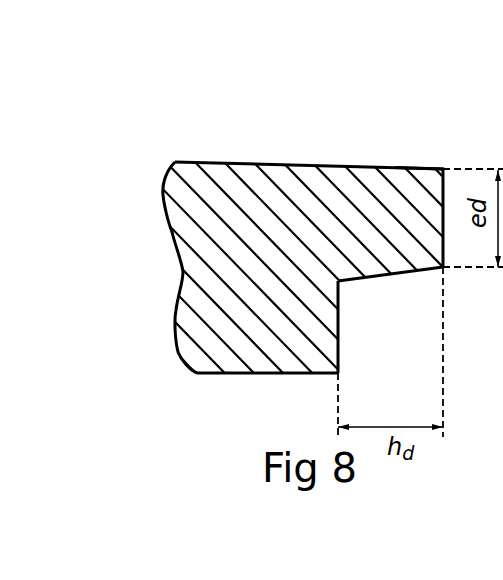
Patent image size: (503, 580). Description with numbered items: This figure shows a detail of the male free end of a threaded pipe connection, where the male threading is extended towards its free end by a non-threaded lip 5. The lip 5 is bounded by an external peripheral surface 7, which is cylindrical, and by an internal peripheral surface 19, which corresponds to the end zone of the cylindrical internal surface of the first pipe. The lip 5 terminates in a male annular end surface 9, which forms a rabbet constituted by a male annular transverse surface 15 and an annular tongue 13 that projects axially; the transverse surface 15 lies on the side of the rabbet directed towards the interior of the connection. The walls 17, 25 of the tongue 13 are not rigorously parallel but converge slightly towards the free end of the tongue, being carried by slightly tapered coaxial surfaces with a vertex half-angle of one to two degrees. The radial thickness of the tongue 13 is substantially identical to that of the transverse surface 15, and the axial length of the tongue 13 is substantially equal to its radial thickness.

The lip 5 is at (200, 208).
The external peripheral surface 7 is at (261, 161).
The male annular end surface 9 is at (462, 283).
The annular tongue 13 is at (363, 199).
The male annular transverse surface 15 is at (340, 340).
The wall of tongue 17 is at (370, 281).
The internal peripheral surface 19 is at (247, 373).
The wall of tongue 25 is at (397, 164).